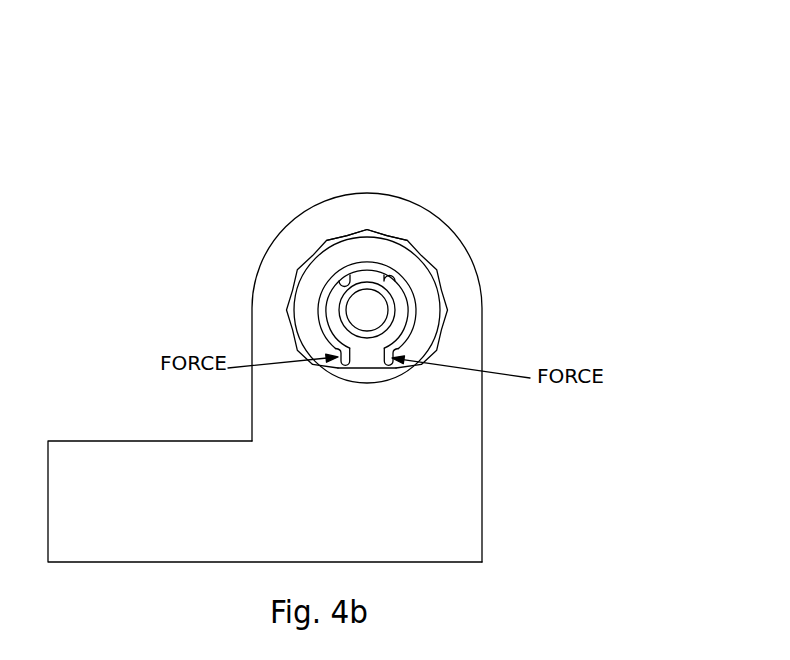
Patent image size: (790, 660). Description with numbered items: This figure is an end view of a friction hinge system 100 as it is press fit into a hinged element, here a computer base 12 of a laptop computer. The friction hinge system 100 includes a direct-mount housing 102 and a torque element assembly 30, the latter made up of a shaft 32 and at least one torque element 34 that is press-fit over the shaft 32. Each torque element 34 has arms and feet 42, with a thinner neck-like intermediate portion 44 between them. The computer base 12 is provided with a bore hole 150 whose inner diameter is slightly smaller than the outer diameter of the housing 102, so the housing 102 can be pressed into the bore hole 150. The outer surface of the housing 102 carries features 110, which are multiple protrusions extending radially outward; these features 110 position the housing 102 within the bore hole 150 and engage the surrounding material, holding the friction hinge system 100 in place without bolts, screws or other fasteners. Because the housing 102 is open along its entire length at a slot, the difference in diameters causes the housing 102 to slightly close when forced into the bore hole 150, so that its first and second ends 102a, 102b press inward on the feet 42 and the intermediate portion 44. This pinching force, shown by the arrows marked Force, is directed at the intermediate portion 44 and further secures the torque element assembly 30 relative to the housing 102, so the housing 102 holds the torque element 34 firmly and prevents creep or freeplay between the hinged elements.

The friction hinge system 100 is at (480, 220).
The computer base 12 is at (159, 459).
The direct-mount housing 102 is at (332, 252).
The first end 102a is at (400, 350).
The second end 102b is at (340, 352).
The features 110 is at (338, 235).
The bore hole 150 is at (380, 233).
The torque element assembly 30 is at (369, 385).
The shaft 32 is at (355, 303).
The torque element 34 is at (398, 297).
The feet 42 is at (370, 365).
The intermediate portion 44 is at (365, 350).